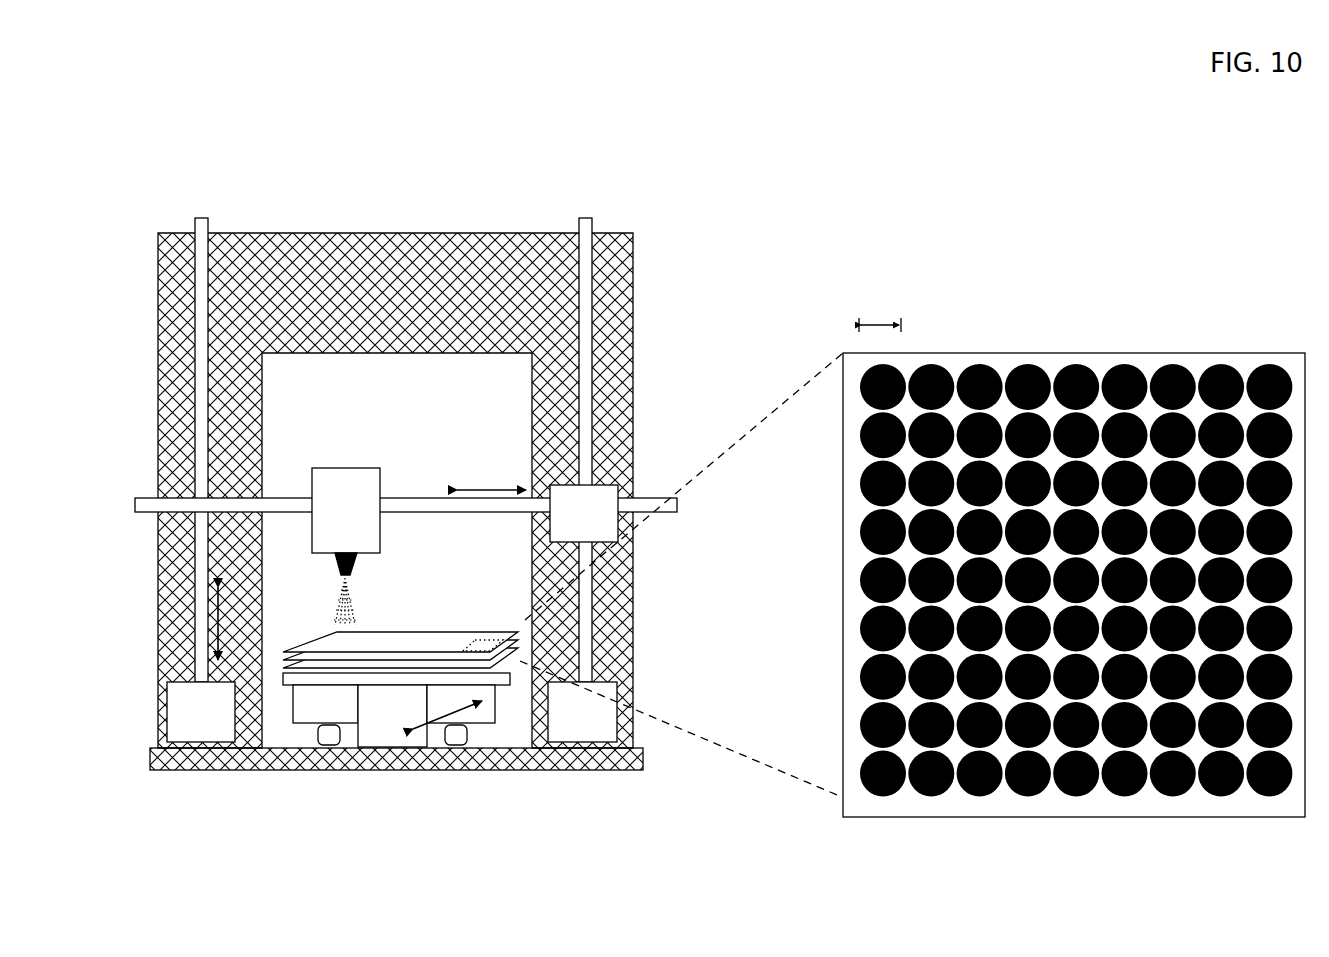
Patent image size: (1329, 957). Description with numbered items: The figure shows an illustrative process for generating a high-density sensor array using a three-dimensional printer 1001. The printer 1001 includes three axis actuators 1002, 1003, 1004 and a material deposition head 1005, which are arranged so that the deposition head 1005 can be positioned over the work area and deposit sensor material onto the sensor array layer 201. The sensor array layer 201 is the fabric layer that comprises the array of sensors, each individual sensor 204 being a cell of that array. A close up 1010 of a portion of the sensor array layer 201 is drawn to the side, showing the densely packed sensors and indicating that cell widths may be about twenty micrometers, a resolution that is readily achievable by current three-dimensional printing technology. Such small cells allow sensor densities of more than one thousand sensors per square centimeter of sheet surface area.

The 3D printer 1001 is at (445, 258).
The material deposition head 1005 is at (353, 468).
The axis actuator 1002 is at (602, 485).
The axis actuator 1004 is at (183, 748).
The axis actuator 1003 is at (404, 744).
The sensor array layer 201 is at (333, 647).
The sensor 204 is at (862, 382).
The close up 1010 is at (1173, 353).